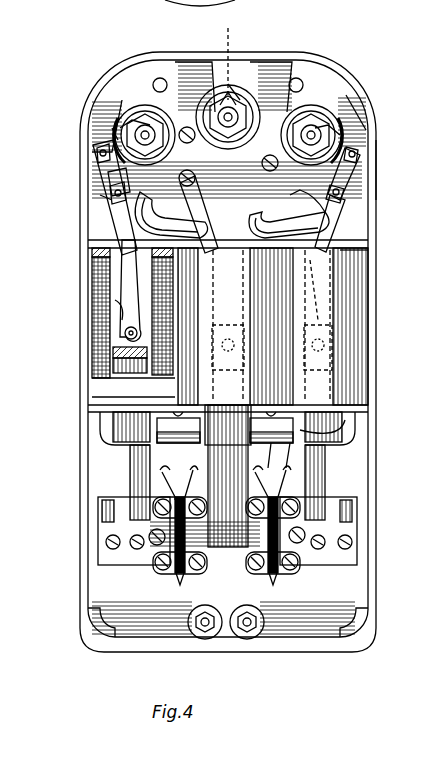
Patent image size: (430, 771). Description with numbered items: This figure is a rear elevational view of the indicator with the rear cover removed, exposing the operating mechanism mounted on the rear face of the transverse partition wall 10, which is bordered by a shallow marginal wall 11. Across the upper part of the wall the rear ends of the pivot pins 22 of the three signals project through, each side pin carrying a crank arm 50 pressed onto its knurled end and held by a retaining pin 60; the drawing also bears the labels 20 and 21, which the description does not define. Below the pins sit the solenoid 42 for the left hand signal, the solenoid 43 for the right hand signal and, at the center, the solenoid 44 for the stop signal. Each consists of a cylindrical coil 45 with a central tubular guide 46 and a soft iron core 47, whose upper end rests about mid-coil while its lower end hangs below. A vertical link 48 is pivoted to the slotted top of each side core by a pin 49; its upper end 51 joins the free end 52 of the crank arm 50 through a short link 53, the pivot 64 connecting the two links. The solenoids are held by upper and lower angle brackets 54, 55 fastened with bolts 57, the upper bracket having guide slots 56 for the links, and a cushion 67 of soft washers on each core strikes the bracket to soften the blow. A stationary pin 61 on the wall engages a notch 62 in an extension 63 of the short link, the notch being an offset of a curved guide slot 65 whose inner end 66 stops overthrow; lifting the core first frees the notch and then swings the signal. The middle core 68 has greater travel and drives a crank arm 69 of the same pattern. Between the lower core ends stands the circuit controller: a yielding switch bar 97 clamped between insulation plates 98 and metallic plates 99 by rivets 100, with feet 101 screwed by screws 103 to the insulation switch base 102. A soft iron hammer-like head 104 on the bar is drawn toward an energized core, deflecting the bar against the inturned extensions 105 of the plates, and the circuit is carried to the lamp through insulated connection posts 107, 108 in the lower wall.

The transverse partition wall 10 is at (372, 182).
The shallow marginal wall 11 is at (378, 170).
The center axis 20 is at (230, 36).
The direction indicator 21 is at (424, 495).
The cylindrical pivot pin 22 is at (146, 118).
The solenoid 42 is at (345, 333).
The solenoid 43 is at (112, 370).
The solenoid 44 is at (95, 388).
The cylindrical coil 45 is at (102, 324).
The central tubular guide 46 is at (100, 280).
The core 47 is at (122, 450).
The vertical link 48 is at (95, 246).
The pin 49 is at (105, 352).
The crank arm 50 is at (133, 132).
The upper end of link 51 is at (110, 205).
The free end of crank arm 52 is at (112, 133).
The short link 53 is at (108, 186).
The angle bracket 54 is at (370, 250).
The angle bracket 55 is at (370, 408).
The guide slot 56 is at (95, 258).
The bolt 57 is at (310, 233).
The retaining pin 60 is at (163, 90).
The stationary pin 61 is at (338, 217).
The notch 62 is at (179, 178).
The extension 63 is at (188, 186).
The pivot 64 is at (100, 195).
The curved guide slot 65 is at (262, 166).
The inner end of slot 66 is at (222, 224).
The cushion 67 is at (105, 310).
The core 68 is at (276, 468).
The crank arm 69 is at (225, 105).
The yielding switch bar 97 is at (168, 480).
The insulation plate 98 is at (180, 584).
The metallic plate 99 is at (192, 478).
The rivet 100 is at (178, 472).
The supporting foot 101 is at (255, 570).
The switch base 102 is at (347, 568).
The screw 103 is at (157, 546).
The hammer-like head 104 is at (288, 450).
The extension 105 is at (190, 446).
The connection post 107 is at (205, 638).
The connection post 108 is at (247, 638).